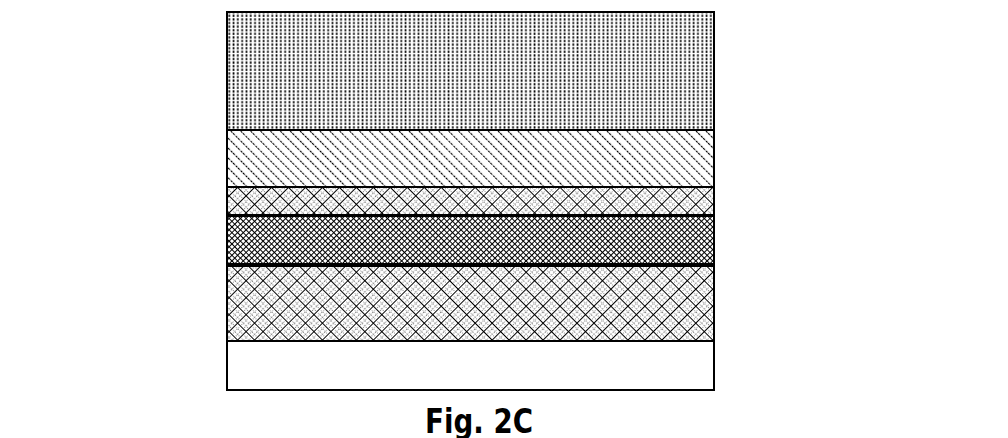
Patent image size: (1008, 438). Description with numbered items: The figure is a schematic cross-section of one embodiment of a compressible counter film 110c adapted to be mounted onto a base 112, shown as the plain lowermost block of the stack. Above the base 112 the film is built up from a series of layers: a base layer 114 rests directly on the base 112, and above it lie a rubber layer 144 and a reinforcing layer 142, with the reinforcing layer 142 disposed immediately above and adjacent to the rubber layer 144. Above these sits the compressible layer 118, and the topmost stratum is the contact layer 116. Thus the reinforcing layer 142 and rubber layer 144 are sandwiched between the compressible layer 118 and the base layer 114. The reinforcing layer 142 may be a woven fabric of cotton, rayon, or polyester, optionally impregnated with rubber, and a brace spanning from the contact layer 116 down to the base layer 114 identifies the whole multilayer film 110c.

The compressible counter film 110c is at (735, 12).
The contact layer 116 is at (248, 88).
The compressible layer 118 is at (246, 148).
The reinforcing layer 142 is at (248, 196).
The rubber layer 144 is at (248, 239).
The base layer 114 is at (250, 288).
The base 112 is at (250, 360).